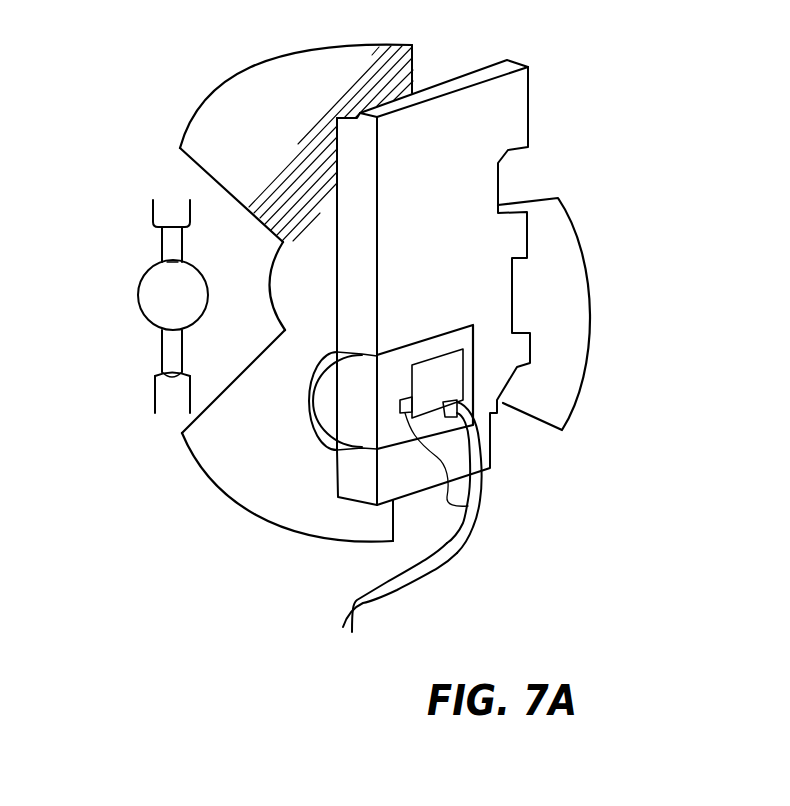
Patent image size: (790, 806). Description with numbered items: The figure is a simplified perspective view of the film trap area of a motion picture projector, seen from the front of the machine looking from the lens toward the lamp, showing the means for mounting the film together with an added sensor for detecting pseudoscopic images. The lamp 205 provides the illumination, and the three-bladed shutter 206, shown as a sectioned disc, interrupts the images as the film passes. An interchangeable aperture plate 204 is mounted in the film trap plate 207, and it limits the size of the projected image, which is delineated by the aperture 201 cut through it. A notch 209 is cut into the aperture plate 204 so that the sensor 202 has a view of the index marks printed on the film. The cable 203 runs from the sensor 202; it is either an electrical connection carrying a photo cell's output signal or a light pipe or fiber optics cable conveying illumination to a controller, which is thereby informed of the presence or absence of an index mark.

The aperture 201 is at (445, 347).
The sensor 202 is at (448, 402).
The cable 203 is at (381, 597).
The aperture plate 204 is at (315, 440).
The lamp 205 is at (138, 277).
The three-bladed shutter 206 is at (312, 53).
The film trap plate 207 is at (497, 65).
The notch 209 is at (468, 506).